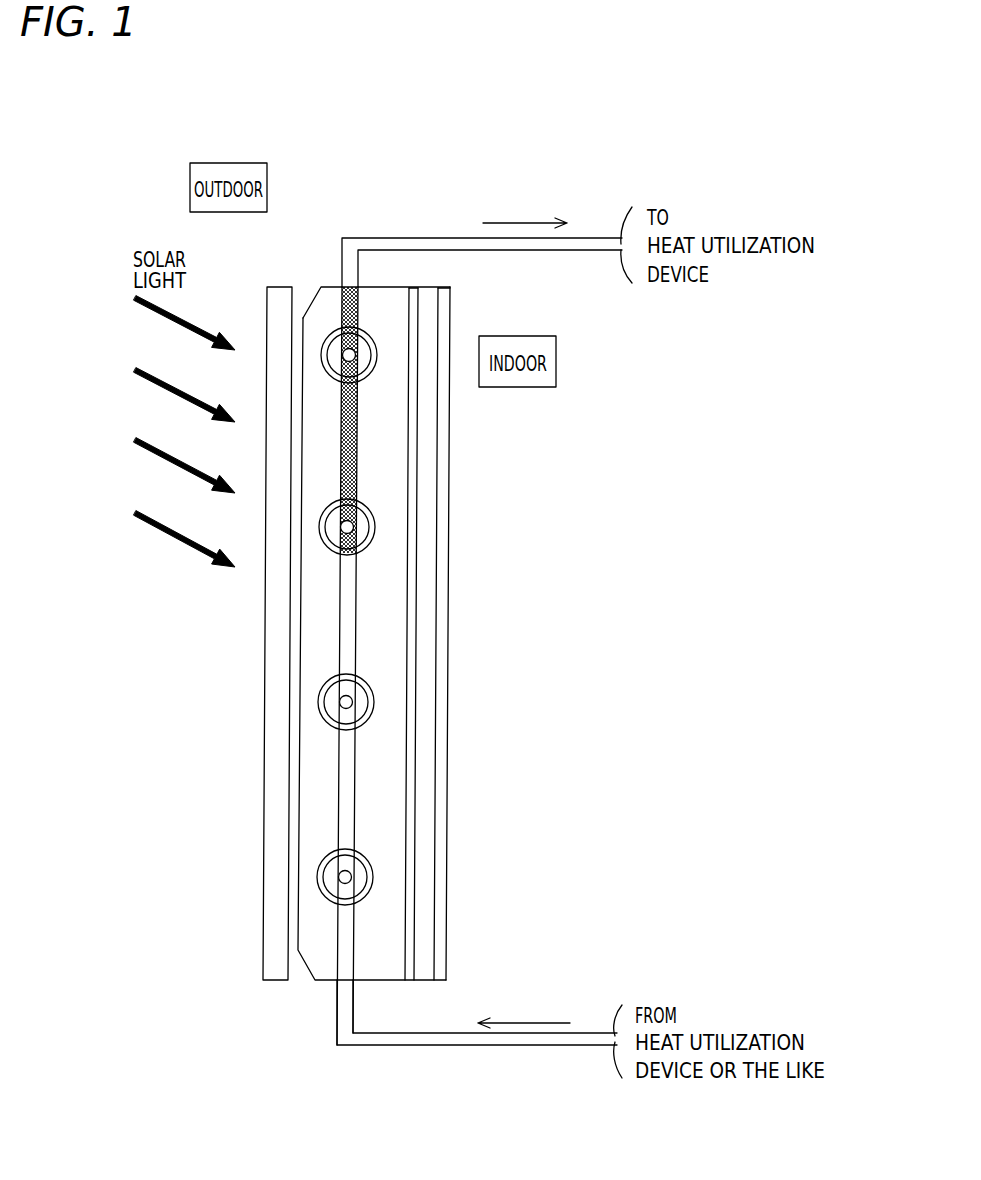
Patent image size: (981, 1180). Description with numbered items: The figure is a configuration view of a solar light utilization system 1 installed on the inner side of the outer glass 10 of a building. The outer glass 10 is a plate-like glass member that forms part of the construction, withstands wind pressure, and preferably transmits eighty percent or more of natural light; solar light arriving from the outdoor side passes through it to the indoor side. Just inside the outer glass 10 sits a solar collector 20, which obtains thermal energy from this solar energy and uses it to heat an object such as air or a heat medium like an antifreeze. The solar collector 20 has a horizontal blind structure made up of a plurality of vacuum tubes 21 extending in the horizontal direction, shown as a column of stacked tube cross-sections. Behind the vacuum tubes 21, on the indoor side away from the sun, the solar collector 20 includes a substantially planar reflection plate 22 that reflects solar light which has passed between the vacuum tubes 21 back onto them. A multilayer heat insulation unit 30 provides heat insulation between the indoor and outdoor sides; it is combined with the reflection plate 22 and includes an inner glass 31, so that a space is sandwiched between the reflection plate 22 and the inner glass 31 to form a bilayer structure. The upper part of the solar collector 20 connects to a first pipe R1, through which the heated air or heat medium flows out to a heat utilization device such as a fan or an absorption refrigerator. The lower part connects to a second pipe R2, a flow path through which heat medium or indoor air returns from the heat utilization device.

The solar light utilization system 1 is at (568, 138).
The outer glass 10 is at (268, 318).
The solar collector 20 is at (334, 277).
The vacuum tube 21 is at (322, 364).
The reflection plate 22 is at (412, 591).
The multilayer heat insulation unit 30 is at (489, 633).
The inner glass 31 is at (449, 440).
The first pipe R1 is at (449, 238).
The second pipe R2 is at (475, 1045).